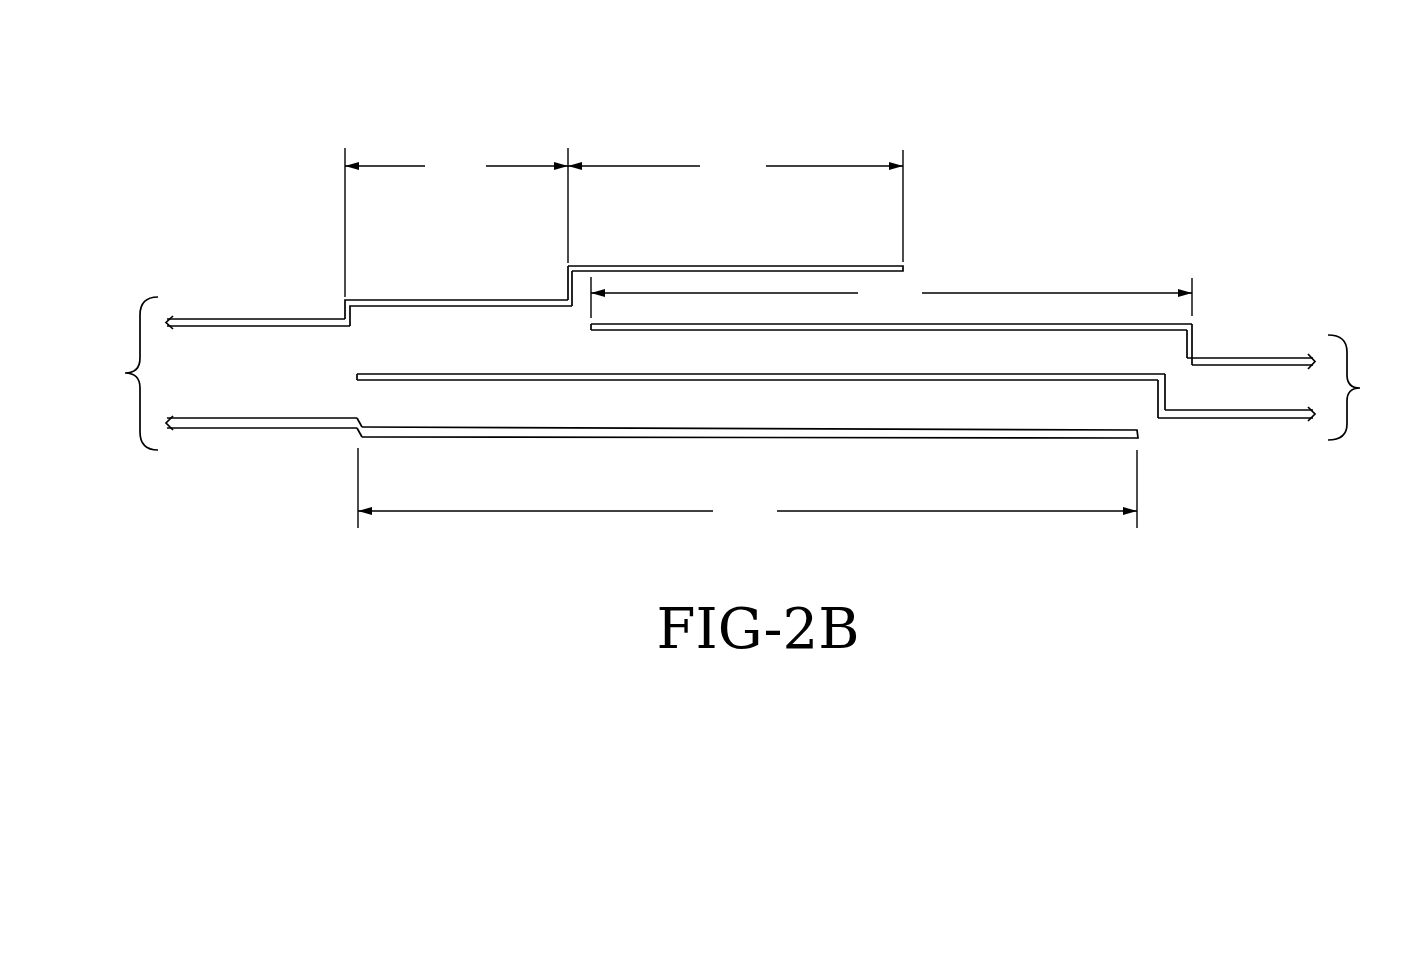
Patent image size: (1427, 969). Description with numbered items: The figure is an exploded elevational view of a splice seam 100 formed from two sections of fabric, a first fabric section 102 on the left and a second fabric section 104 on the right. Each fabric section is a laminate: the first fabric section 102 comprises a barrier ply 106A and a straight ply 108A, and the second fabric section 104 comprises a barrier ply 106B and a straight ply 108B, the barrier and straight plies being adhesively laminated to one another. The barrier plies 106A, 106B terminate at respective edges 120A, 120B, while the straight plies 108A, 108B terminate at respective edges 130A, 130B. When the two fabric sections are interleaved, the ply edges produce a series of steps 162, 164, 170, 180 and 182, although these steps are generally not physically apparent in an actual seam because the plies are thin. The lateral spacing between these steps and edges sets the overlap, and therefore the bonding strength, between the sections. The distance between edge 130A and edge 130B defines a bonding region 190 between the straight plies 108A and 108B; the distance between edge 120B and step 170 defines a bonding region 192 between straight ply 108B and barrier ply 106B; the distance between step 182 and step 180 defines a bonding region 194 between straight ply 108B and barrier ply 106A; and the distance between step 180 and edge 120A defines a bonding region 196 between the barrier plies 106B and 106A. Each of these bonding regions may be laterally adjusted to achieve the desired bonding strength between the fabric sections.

The splice seam 100 is at (506, 110).
The first fabric section 102 is at (112, 373).
The second fabric section 104 is at (1373, 387).
The barrier ply 106A is at (192, 315).
The barrier ply 106B is at (1278, 355).
The straight ply 108A is at (201, 435).
The straight ply 108B is at (1263, 422).
The edge of barrier ply 120A is at (905, 266).
The edge of barrier ply 120B is at (592, 325).
The edge of straight ply 130A is at (1140, 438).
The edge of straight ply 130B is at (357, 377).
The step 162 is at (357, 433).
The step 164 is at (1166, 402).
The step 170 is at (1193, 350).
The step 180 is at (568, 267).
The step 182 is at (345, 298).
The bonding region 190 is at (747, 488).
The bonding region 192 is at (891, 297).
The bonding region 194 is at (456, 222).
The bonding region 196 is at (735, 206).